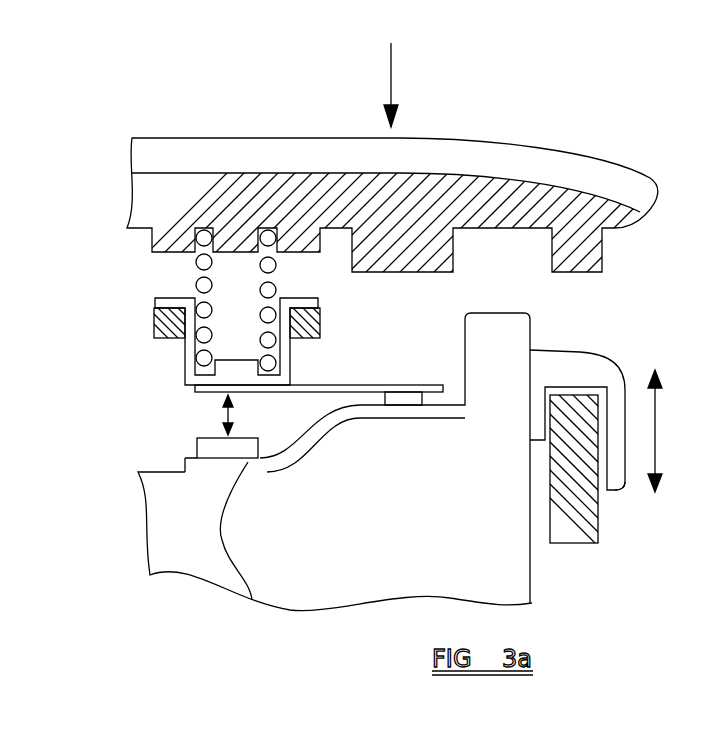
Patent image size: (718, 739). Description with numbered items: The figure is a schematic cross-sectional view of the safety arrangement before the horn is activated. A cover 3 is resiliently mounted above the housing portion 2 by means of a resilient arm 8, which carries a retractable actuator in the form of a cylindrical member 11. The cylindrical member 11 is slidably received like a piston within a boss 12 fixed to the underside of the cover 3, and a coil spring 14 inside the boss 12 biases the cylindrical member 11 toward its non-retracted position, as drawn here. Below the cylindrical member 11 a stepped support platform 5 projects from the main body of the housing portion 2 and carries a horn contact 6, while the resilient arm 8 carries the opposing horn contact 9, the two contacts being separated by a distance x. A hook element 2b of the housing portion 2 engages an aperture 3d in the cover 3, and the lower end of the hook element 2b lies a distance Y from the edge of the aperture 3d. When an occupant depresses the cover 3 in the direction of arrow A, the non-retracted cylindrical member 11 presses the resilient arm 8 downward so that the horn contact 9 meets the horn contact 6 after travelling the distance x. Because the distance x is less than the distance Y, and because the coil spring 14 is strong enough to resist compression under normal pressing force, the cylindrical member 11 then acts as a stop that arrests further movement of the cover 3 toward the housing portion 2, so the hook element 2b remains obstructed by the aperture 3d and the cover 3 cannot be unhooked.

The housing portion 2 is at (532, 557).
The hook elements 2b is at (630, 472).
The cover 3 is at (567, 152).
The apertures 3d is at (568, 308).
The stepped support platform 5 is at (252, 600).
The horn contact 6 is at (197, 448).
The resilient arm 8 is at (338, 384).
The horn contact 9 is at (222, 393).
The cylindrical member 11 is at (185, 355).
The boss 12 is at (322, 328).
The coil spring 14 is at (198, 263).
The arrow A is at (391, 73).
The distance x is at (232, 413).
The distance y Y is at (655, 440).